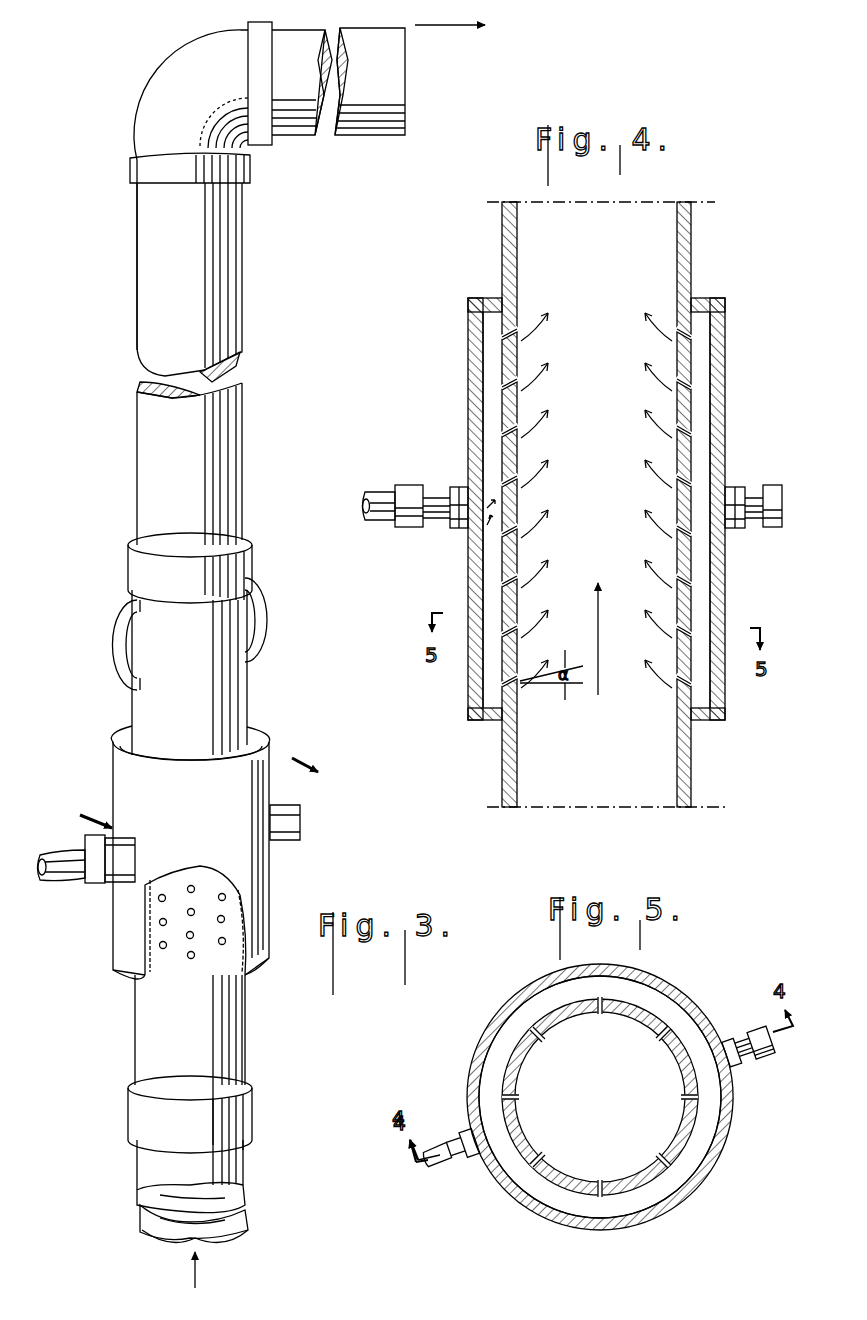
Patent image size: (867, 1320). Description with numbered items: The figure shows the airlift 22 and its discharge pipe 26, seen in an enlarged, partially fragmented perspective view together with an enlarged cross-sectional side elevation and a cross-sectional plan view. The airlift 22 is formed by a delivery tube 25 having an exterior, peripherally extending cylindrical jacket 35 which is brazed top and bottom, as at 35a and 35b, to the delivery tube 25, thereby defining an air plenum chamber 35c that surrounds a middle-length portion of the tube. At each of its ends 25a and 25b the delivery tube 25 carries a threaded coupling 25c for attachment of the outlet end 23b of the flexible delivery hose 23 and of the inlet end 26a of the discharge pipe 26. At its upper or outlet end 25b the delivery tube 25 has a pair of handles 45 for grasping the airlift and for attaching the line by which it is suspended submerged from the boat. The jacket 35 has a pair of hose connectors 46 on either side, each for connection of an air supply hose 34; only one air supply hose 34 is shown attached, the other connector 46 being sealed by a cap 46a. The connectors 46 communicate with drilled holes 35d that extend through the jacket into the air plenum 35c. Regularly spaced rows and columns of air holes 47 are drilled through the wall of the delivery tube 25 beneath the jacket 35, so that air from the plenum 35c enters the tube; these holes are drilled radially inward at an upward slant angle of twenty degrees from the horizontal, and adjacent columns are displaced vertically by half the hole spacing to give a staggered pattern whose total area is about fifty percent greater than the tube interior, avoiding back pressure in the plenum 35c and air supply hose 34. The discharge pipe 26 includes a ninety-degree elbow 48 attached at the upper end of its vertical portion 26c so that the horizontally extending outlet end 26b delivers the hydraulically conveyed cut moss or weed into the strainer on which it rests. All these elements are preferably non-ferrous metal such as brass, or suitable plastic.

In FIG. 3, the airlift 22 is at (105, 710).
In FIG. 3, the flexible delivery hose 23 is at (155, 1213).
In FIG. 3, the outlet end of flexible delivery hose 23b is at (225, 1205).
In FIG. 3, the delivery tube 25 is at (228, 1030).
In FIG. 4, the delivery tube 25 is at (508, 771).
In FIG. 3, the lower end of delivery tube 25a is at (215, 1092).
In FIG. 3, the upper or outlet end of delivery tube 25b is at (225, 615).
In FIG. 3, the threaded coupling 25c is at (245, 1112).
In FIG. 3, the discharge pipe 26 is at (120, 425).
In FIG. 3, the inlet end of discharge pipe 26a is at (237, 518).
In FIG. 3, the horizontally extending outlet end 26b is at (406, 120).
In FIG. 3, the vertical portion of discharge pipe 26c is at (245, 200).
In FIG. 3, the air supply hose 34 is at (60, 877).
In FIG. 4, the air supply hose 34 is at (370, 492).
In FIG. 3, the cylindrical jacket 35 is at (258, 872).
In FIG. 4, the cylindrical jacket 35 is at (735, 586).
In FIG. 5, the cylindrical jacket 35 is at (735, 1150).
In FIG. 3, the top brazed joint of jacket 35a is at (258, 735).
In FIG. 4, the top brazed joint of jacket 35a is at (705, 302).
In FIG. 3, the bottom brazed joint of jacket 35b is at (245, 967).
In FIG. 4, the bottom brazed joint of jacket 35b is at (700, 722).
In FIG. 4, the air plenum chamber 35c is at (705, 553).
In FIG. 5, the air plenum chamber 35c is at (710, 1097).
In FIG. 4, the drilled hole 35d is at (478, 522).
In FIG. 3, the handle 45 is at (115, 612).
In FIG. 4, the hose connector 46 is at (433, 495).
In FIG. 4, the cap 46a is at (782, 506).
In FIG. 3, the air hole 47 is at (192, 959).
In FIG. 4, the air hole 47 is at (503, 596).
In FIG. 5, the air hole 47 is at (598, 1003).
In FIG. 3, the 90° elbow 48 is at (165, 90).